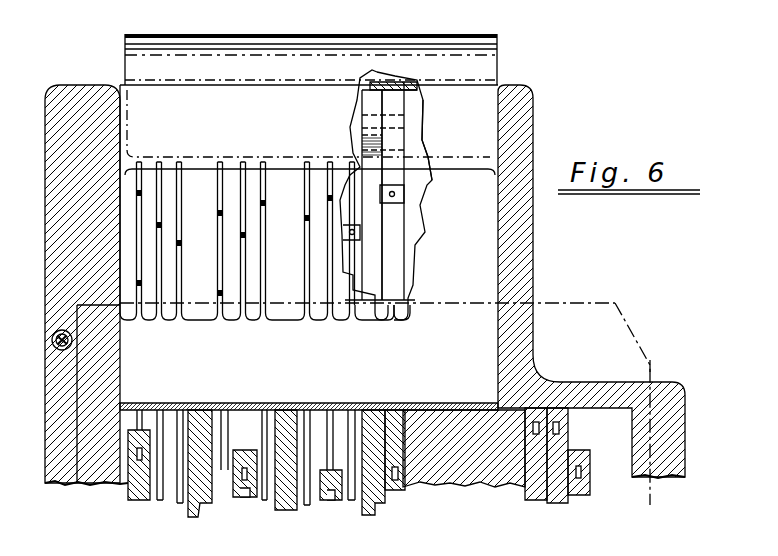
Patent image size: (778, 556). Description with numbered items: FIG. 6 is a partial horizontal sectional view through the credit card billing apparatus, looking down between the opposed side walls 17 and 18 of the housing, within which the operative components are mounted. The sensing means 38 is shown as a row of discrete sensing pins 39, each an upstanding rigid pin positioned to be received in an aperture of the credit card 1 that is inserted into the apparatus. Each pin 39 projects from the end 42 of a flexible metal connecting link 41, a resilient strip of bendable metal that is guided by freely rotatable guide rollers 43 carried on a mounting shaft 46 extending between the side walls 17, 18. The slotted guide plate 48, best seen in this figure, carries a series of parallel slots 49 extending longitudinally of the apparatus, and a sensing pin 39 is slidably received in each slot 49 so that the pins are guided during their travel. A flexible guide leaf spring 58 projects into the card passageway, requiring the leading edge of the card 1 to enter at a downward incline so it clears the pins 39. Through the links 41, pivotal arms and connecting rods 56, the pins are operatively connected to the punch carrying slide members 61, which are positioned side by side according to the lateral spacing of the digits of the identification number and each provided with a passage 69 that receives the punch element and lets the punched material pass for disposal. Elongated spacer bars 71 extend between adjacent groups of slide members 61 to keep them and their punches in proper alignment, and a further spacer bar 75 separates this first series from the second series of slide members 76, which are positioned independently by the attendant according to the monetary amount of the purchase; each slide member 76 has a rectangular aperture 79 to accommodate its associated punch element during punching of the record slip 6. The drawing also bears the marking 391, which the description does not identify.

The credit card 1 is at (444, 150).
The record slip 6 is at (590, 303).
The side wall 17 is at (68, 270).
The side wall 18 is at (690, 441).
The sensing means 38 is at (252, 128).
The sensing pin 39 is at (180, 240).
The flexible metal connecting link 41 is at (418, 82).
The end of connecting link 42 is at (360, 240).
The guide roller 43 is at (392, 82).
The mounting shaft 46 is at (415, 98).
The slotted guide plate 48 is at (125, 220).
The parallel slot 49 is at (265, 285).
The connecting rod 56 is at (256, 412).
The flexible guide leaf spring 58 is at (432, 34).
The punch carrying slide member 61 is at (140, 500).
The passage 69 is at (330, 500).
The elongated spacer bar 71 is at (198, 517).
The spacer bar 75 is at (462, 490).
The second series slide member 76 is at (580, 497).
The rectangular aperture 79 is at (560, 434).
The bracket 391 is at (390, 198).